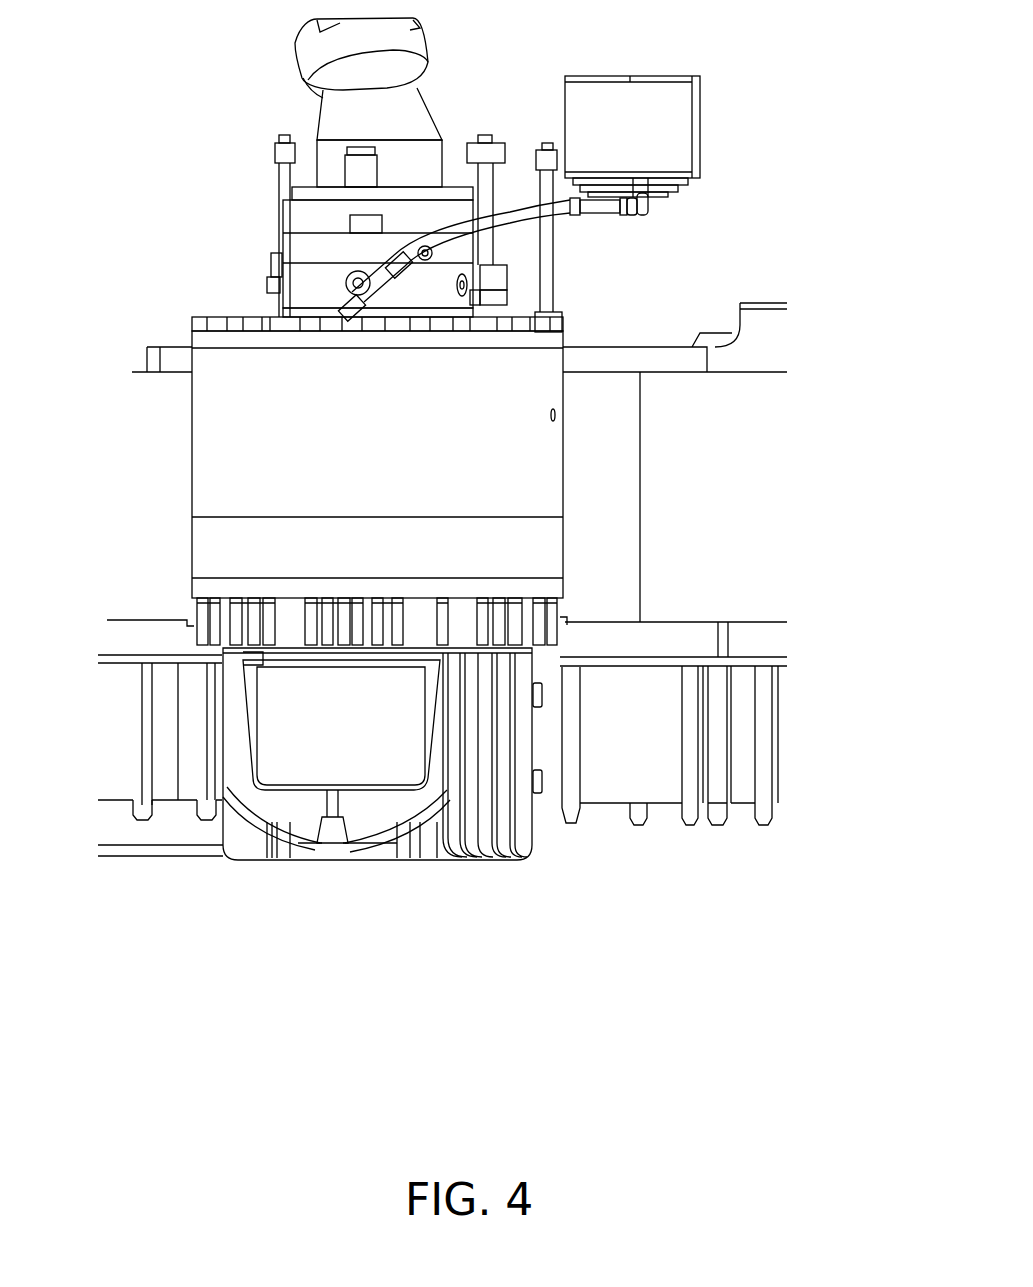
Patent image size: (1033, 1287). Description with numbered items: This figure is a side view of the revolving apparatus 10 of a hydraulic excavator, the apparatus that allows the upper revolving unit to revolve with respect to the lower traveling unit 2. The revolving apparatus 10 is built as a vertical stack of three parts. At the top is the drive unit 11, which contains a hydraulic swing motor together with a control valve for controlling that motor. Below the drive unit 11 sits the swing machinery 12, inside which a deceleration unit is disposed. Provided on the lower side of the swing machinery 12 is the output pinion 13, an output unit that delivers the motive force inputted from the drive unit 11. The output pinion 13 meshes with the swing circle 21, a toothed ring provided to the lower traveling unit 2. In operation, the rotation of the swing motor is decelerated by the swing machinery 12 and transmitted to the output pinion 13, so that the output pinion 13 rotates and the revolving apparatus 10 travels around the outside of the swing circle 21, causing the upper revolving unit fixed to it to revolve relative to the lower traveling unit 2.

The lower traveling unit 2 is at (655, 858).
The revolving apparatus 10 is at (228, 279).
The drive unit 11 is at (327, 100).
The swing machinery 12 is at (225, 452).
The output pinion 13 is at (353, 762).
The swing circle 21 is at (552, 778).